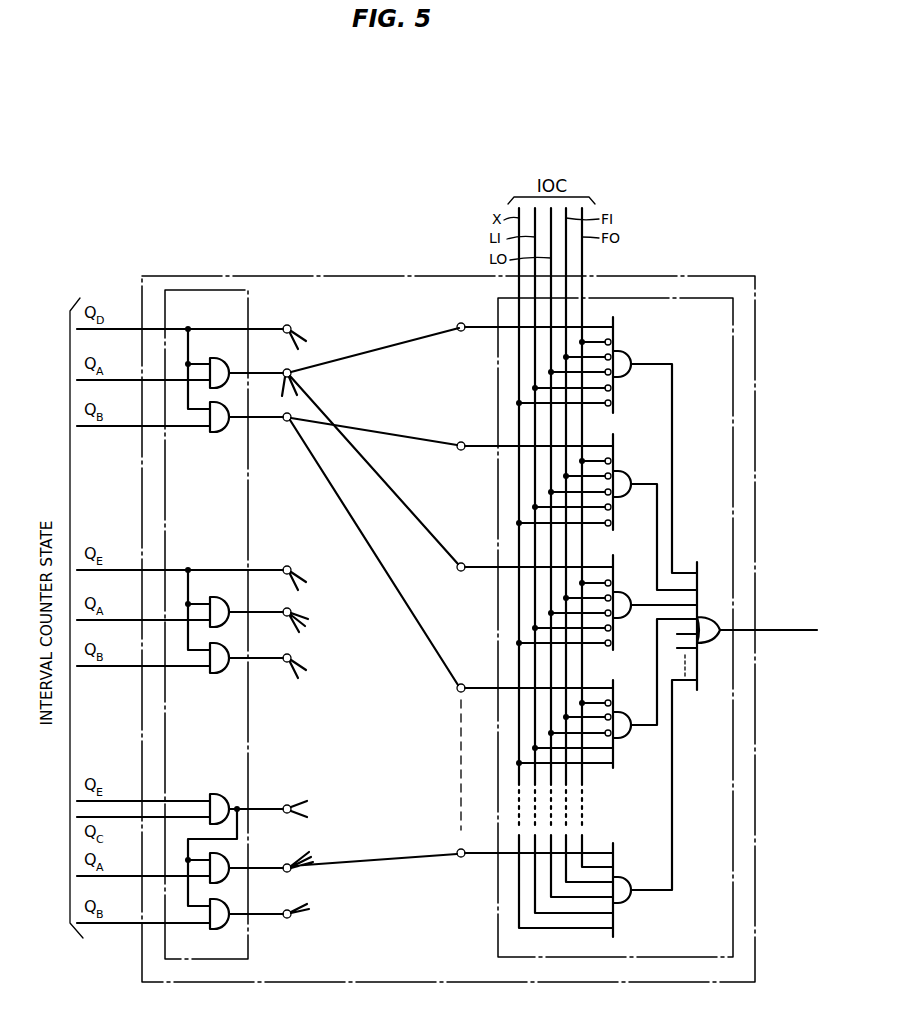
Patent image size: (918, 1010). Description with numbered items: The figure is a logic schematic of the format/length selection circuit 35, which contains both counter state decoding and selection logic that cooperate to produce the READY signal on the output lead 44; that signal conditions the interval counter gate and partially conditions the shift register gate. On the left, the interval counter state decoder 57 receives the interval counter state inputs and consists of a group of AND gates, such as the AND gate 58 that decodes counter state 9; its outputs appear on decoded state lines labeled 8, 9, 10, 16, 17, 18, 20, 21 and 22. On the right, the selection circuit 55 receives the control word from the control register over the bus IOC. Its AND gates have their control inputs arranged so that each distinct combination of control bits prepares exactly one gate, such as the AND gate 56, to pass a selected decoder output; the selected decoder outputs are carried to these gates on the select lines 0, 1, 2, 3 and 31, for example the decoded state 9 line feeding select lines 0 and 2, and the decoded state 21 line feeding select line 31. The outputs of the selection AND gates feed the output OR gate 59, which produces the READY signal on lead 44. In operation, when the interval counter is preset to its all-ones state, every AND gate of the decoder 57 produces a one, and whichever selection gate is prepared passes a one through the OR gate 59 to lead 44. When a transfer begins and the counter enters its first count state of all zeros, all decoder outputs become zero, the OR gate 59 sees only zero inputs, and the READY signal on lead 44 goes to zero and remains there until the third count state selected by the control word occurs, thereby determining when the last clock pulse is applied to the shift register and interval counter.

The format/length selection circuit 35 is at (297, 218).
The state decoder 57 is at (214, 313).
The AND gate 58 is at (229, 366).
The selection circuit 55 is at (706, 324).
The AND gate 56 is at (626, 601).
The output OR gate 59 is at (715, 638).
The output lead 44 is at (776, 632).
The select line 0 is at (535, 318).
The select line 1 is at (535, 437).
The select line 2 is at (535, 558).
The select line 3 is at (535, 748).
The select line 31 is at (535, 844).
The decoded counter state output 8 is at (286, 328).
The counter state 9 is at (363, 446).
The decoded counter state output 10 is at (361, 540).
The decoded counter state output 16 is at (284, 569).
The decoded counter state output 17 is at (285, 611).
The decoded counter state output 18 is at (284, 657).
The decoded counter state output 20 is at (285, 802).
The decoded counter state output 21 is at (360, 859).
The decoded counter state output 22 is at (286, 905).